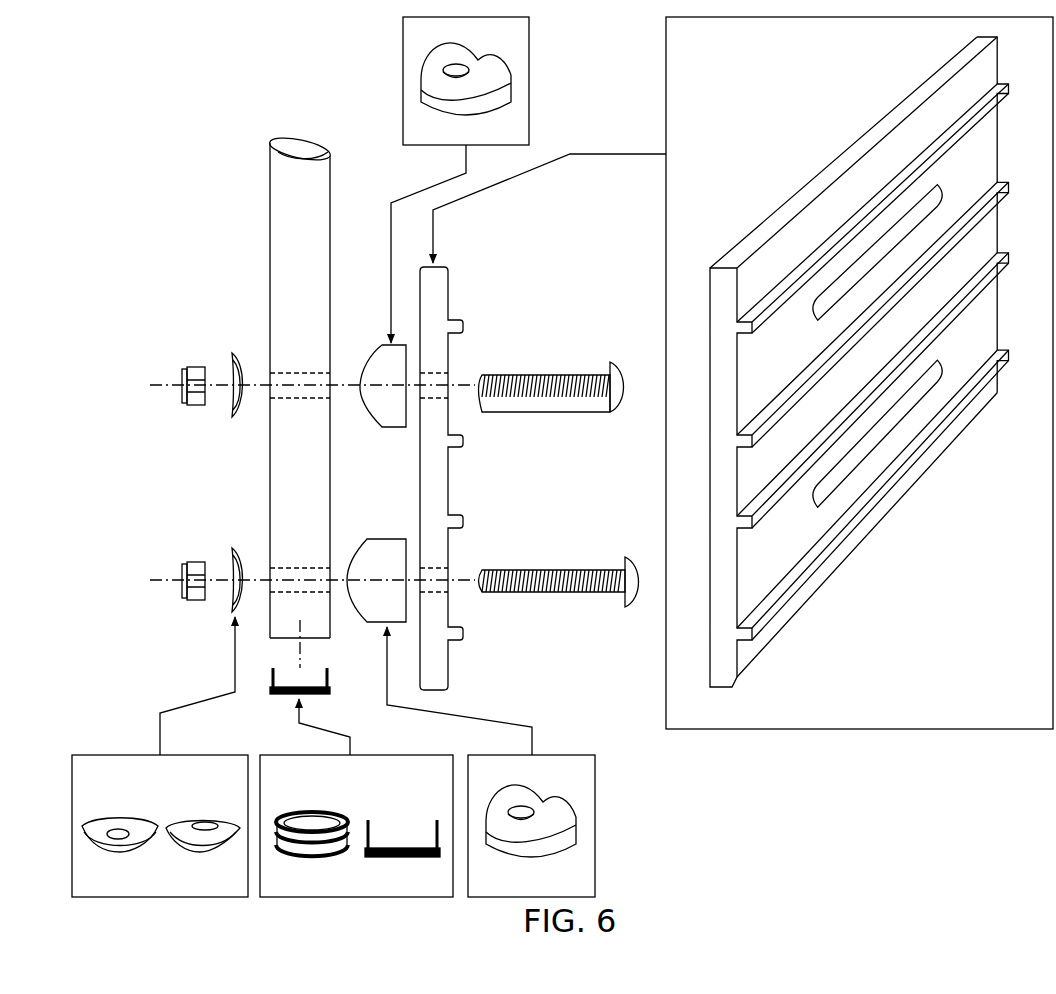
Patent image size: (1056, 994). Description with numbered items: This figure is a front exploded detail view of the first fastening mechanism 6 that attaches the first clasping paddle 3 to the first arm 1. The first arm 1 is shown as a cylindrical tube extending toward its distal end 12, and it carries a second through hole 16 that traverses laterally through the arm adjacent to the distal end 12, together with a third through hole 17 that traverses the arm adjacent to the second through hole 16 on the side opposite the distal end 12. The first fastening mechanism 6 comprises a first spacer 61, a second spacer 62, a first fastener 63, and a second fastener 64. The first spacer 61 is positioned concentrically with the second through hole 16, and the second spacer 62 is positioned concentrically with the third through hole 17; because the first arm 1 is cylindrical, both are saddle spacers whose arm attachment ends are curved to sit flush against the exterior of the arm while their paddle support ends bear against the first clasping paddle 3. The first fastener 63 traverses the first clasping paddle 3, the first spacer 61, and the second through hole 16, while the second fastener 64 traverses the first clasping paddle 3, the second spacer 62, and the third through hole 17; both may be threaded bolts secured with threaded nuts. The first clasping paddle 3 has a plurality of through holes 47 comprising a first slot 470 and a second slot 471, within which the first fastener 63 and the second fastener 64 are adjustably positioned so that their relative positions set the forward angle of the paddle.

The first arm 1 is at (290, 177).
The first clasping paddle 3 is at (469, 260).
The first fastening mechanism 6 is at (136, 333).
The distal end 12 is at (260, 651).
The second through hole 16 is at (305, 373).
The third through hole 17 is at (299, 568).
The plurality of through holes 47 is at (936, 186).
The first spacer 61 is at (382, 413).
The second spacer 62 is at (393, 548).
The first fastener 63 is at (554, 375).
The second fastener 64 is at (559, 570).
The first slot 470 is at (440, 373).
The second slot 471 is at (438, 570).